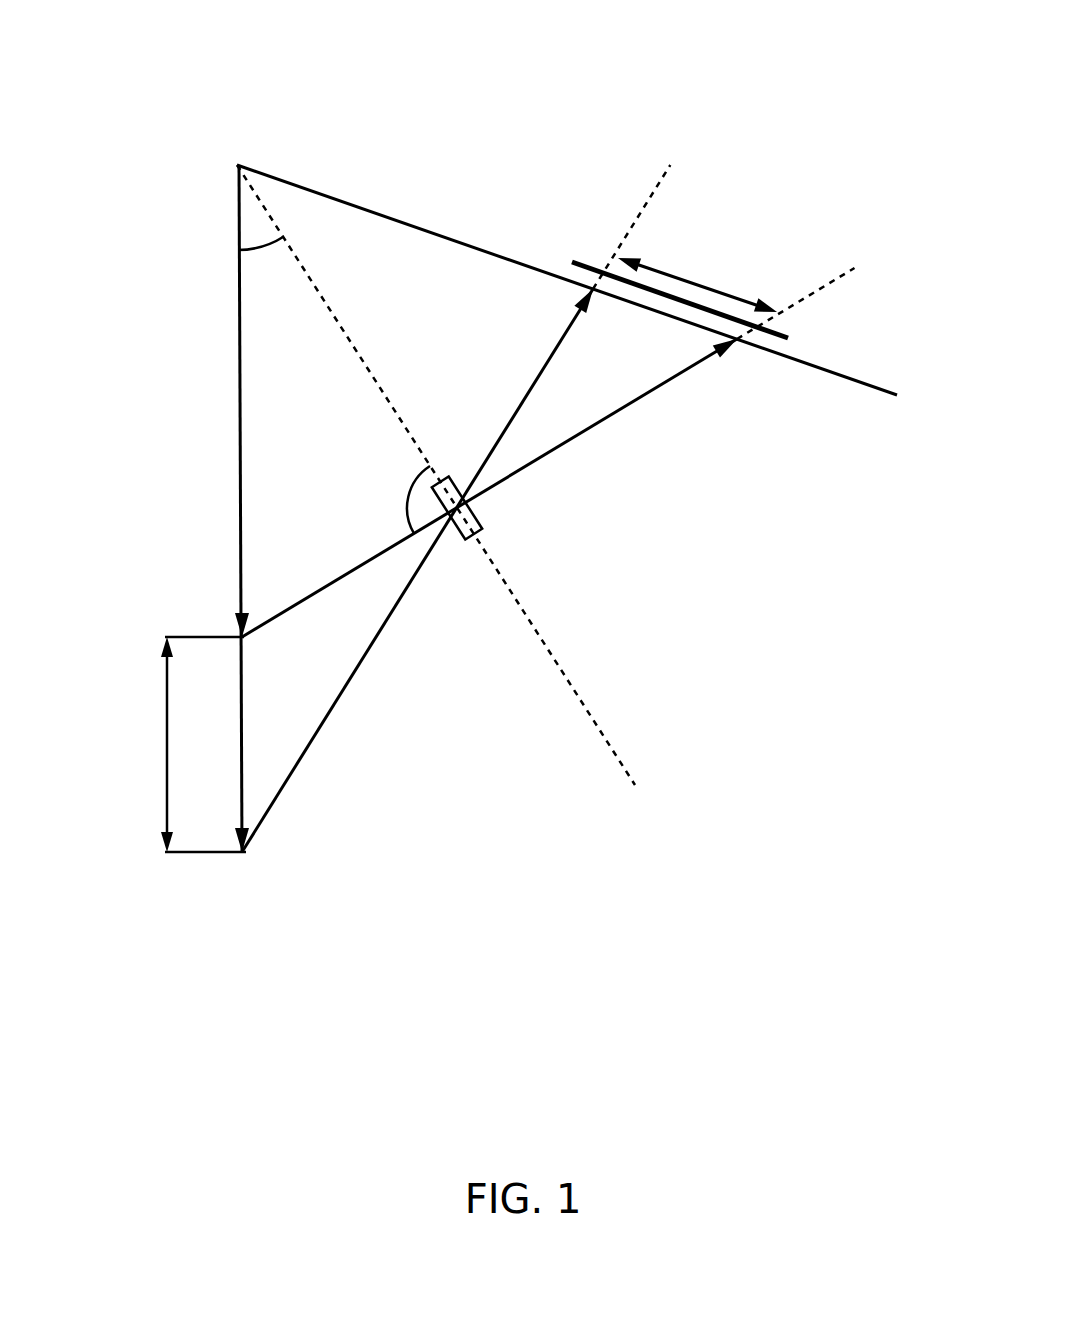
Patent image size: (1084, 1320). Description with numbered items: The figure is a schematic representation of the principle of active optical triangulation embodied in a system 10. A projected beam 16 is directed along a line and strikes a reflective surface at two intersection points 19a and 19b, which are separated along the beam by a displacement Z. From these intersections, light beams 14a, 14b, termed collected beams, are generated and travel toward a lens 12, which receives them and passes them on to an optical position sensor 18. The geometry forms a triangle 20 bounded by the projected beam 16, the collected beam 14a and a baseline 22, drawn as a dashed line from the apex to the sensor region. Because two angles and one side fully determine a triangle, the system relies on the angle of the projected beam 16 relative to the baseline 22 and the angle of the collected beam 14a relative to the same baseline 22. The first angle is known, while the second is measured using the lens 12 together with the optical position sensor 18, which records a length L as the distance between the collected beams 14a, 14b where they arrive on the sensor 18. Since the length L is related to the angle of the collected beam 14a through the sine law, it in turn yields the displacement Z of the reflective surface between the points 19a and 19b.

The system 10 is at (768, 82).
The lens 12 is at (473, 513).
The collected beam 14a is at (317, 592).
The collected beam 14b is at (368, 660).
The projected beam 16 is at (238, 370).
The optical position sensor 18 is at (587, 264).
The intersection of projected beam with reflective surface 19a is at (236, 631).
The intersection of projected beam with reflective surface 19b is at (247, 853).
The triangle 20 is at (567, 289).
The baseline 22 is at (343, 327).
The length L is at (680, 277).
The displacement Z is at (165, 753).